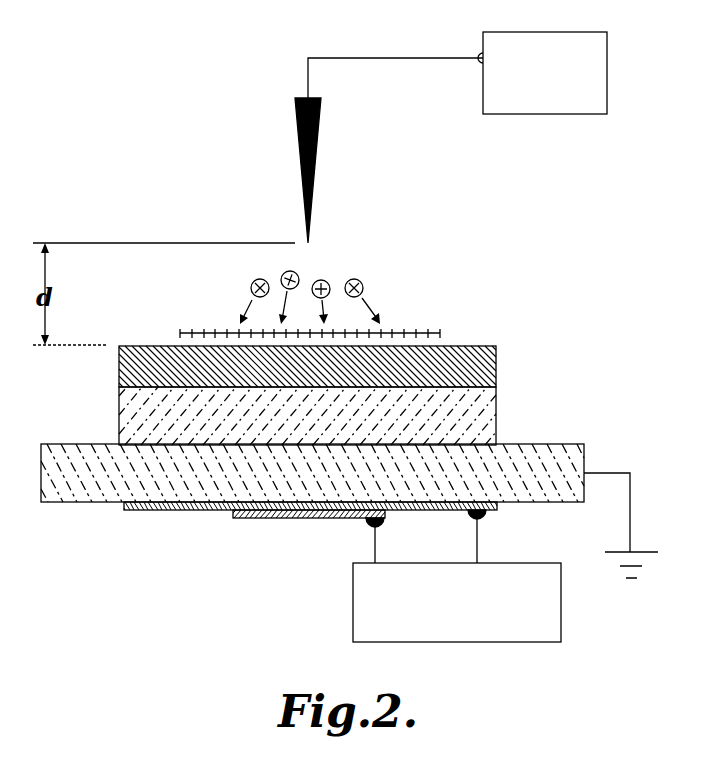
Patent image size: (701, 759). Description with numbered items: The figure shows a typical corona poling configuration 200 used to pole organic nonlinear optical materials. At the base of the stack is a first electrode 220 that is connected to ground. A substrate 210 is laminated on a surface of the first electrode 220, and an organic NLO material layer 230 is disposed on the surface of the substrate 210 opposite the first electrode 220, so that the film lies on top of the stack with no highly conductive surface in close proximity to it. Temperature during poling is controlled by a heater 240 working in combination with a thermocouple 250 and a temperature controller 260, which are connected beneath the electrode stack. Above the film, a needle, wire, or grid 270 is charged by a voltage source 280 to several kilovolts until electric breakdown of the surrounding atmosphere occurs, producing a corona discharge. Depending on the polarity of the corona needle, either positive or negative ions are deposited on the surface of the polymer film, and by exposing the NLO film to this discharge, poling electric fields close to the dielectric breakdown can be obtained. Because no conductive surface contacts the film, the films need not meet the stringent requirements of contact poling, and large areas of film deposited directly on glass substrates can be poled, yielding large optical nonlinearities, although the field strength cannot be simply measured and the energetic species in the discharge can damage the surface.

The corona poling configuration 200 is at (147, 114).
The substrate 210 is at (497, 413).
The first electrode 220 is at (584, 448).
The organic NLO material layer 230 is at (497, 356).
The heater 240 is at (175, 512).
The thermocouple 250 is at (297, 520).
The temperature controller 260 is at (559, 625).
The needle, wire, or grid 270 is at (299, 150).
The voltage source 280 is at (606, 70).